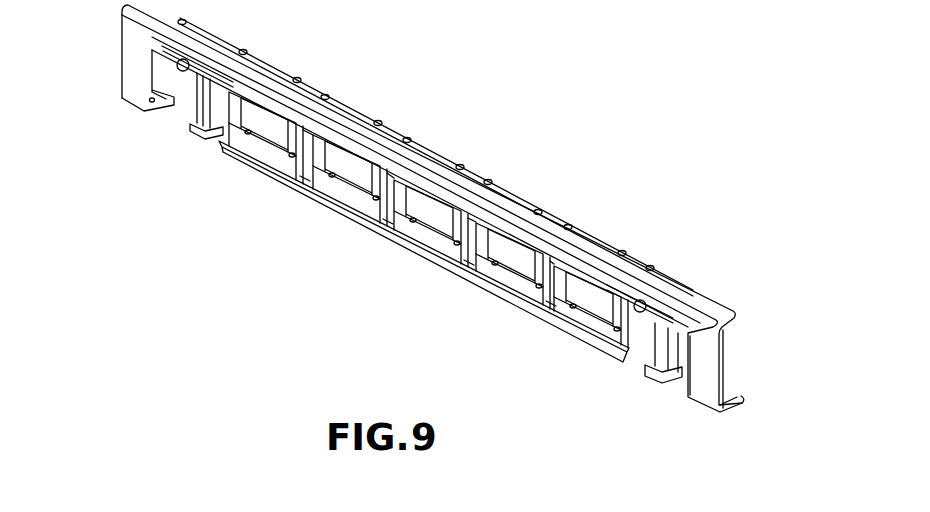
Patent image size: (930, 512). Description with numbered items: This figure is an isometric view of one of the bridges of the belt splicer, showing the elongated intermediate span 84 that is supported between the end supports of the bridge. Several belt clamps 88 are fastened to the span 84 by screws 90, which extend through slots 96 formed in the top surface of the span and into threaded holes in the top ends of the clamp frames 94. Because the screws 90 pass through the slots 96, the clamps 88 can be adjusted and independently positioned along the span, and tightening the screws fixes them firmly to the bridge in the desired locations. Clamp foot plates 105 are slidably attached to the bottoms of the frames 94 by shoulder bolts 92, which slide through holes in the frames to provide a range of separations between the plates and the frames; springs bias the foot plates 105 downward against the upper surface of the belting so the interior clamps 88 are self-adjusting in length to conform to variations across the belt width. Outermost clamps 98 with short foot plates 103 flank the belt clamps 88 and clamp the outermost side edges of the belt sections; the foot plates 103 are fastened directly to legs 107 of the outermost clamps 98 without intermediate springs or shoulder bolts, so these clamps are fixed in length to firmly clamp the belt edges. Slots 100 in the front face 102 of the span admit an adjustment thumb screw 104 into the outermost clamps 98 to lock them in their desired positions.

The intermediate span 84 is at (438, 152).
The belt clamp 88 is at (602, 325).
The screw 90 is at (568, 223).
The shoulder bolt 92 is at (478, 240).
The clamp frame 94 is at (512, 292).
The slot 96 is at (341, 106).
The outermost clamp 98 is at (200, 113).
The slot 100 is at (665, 315).
The front face 102 is at (392, 160).
The short foot plate 103 is at (652, 384).
The adjustment thumb screw 104 is at (631, 302).
The clamp foot plate 105 is at (276, 178).
The leg 107 is at (660, 350).